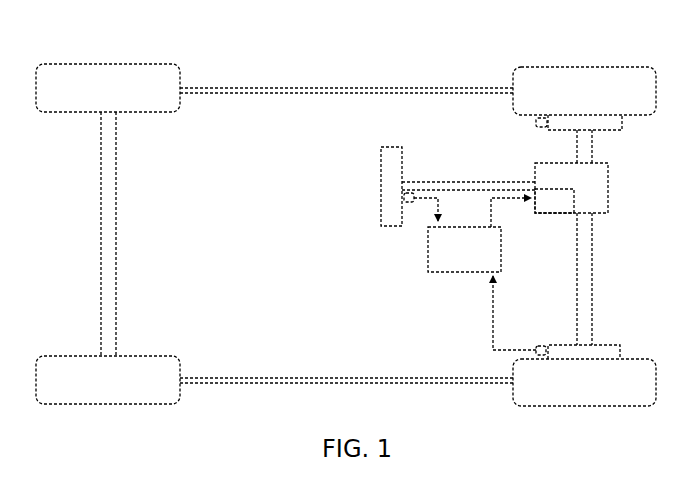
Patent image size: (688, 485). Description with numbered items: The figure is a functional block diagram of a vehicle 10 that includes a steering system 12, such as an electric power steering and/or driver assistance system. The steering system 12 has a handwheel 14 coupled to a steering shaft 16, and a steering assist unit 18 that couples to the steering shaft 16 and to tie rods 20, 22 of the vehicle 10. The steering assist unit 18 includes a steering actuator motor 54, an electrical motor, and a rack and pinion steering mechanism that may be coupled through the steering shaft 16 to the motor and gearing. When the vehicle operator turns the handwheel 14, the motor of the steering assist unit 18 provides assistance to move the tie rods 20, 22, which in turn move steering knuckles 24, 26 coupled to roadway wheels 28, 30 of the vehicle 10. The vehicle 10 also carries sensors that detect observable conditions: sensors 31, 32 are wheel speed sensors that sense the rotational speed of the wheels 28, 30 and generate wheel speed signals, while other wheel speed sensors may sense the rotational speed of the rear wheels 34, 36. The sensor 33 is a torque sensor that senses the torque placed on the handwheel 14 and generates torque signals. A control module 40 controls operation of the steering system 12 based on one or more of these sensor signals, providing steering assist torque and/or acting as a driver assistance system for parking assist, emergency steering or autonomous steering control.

The vehicle 10 is at (545, 61).
The steering system 12 is at (433, 156).
The handwheel 14 is at (395, 147).
The steering shaft 16 is at (469, 182).
The steering assist unit 18 is at (609, 193).
The tie rod 20 is at (594, 156).
The tie rod 22 is at (594, 290).
The steering knuckle 24 is at (560, 132).
The steering knuckle 26 is at (608, 345).
The roadway wheel 28 is at (512, 78).
The roadway wheel 30 is at (640, 359).
The wheel speed sensor 31 is at (535, 122).
The wheel speed sensor 32 is at (543, 346).
The torque sensor 33 is at (410, 193).
The rear wheel 34 is at (180, 78).
The rear wheel 36 is at (180, 367).
The control module 40 is at (455, 227).
The steering actuator motor 54 is at (577, 207).